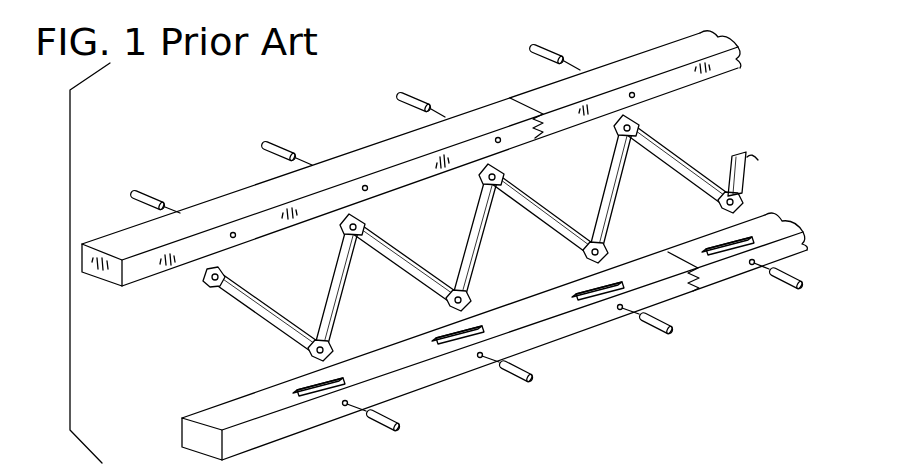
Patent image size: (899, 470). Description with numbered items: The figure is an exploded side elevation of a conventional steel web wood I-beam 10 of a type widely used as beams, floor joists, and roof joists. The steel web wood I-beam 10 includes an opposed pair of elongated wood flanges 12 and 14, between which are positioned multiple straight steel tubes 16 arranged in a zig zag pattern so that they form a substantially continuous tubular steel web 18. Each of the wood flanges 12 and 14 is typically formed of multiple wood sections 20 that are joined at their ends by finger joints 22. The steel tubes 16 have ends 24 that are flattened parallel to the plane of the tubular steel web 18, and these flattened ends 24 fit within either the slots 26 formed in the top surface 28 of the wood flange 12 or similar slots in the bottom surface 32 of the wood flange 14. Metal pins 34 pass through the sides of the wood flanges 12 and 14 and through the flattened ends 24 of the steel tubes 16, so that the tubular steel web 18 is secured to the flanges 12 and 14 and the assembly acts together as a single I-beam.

The steel web wood I-beam 10 is at (778, 120).
The wood flange 12 is at (810, 236).
The wood flange 14 is at (748, 59).
The straight steel tubes 16 is at (612, 172).
The tubular steel web 18 is at (755, 176).
The wood sections 20 is at (697, 40).
The finger joints 22 is at (536, 112).
The flattened ends 24 is at (346, 232).
The slots 26 is at (722, 242).
The top surface 28 is at (203, 416).
The bottom surface 32 is at (94, 276).
The metal pins 34 is at (286, 150).